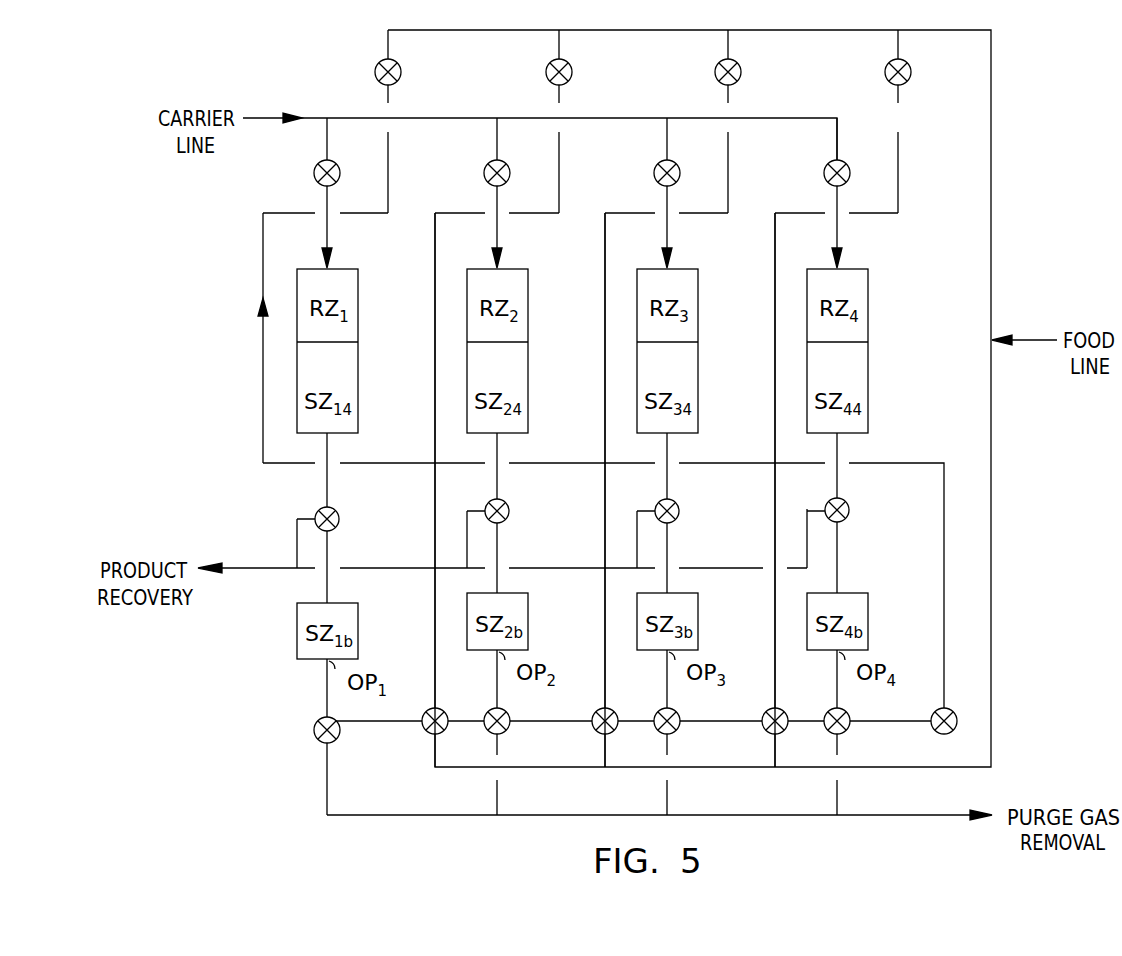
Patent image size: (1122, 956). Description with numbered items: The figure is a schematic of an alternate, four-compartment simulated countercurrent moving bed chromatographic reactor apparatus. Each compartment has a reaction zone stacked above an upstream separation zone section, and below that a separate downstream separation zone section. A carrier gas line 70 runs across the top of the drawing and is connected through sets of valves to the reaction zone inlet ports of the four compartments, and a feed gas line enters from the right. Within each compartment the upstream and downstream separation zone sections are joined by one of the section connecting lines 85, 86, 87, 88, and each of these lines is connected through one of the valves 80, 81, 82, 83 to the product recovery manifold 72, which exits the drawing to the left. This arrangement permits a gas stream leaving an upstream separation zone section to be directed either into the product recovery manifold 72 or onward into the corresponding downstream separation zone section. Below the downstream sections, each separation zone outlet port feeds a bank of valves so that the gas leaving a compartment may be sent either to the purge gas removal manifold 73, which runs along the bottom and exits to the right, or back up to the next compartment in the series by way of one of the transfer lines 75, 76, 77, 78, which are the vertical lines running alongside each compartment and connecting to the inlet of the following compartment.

The carrier gas line 70 is at (265, 118).
The product recovery manifold 72 is at (245, 568).
The purge gas removal manifold 73 is at (897, 815).
The transfer line 75 is at (263, 340).
The transfer line 76 is at (435, 340).
The transfer line 77 is at (605, 340).
The transfer line 78 is at (775, 340).
The valve 80 is at (340, 519).
The valve 81 is at (510, 511).
The valve 82 is at (680, 511).
The valve 83 is at (850, 510).
The section connecting line 85 is at (325, 497).
The section connecting line 86 is at (494, 489).
The section connecting line 87 is at (664, 489).
The section connecting line 88 is at (834, 489).